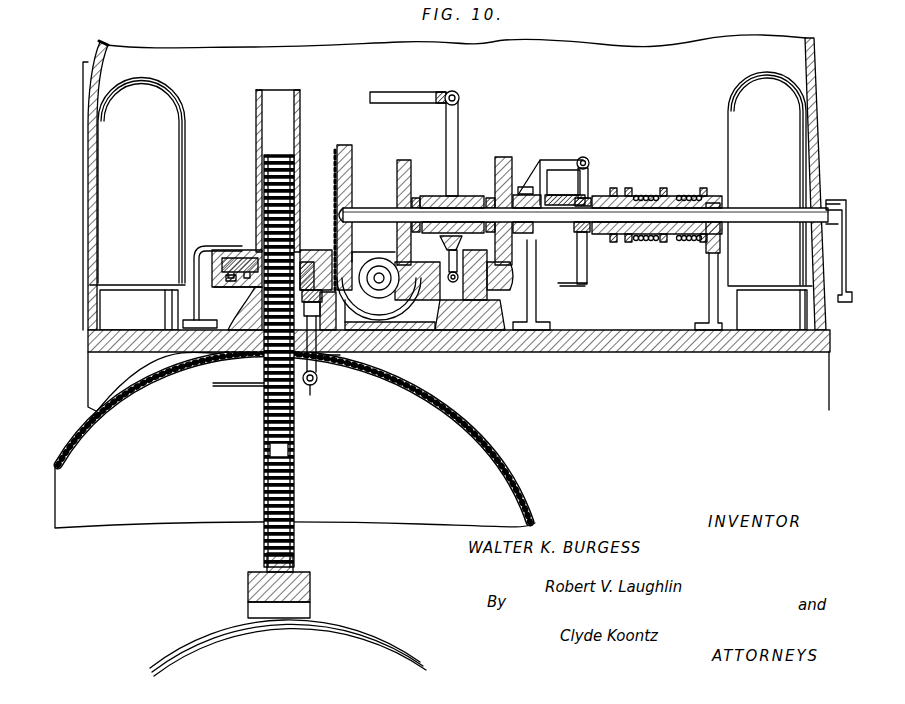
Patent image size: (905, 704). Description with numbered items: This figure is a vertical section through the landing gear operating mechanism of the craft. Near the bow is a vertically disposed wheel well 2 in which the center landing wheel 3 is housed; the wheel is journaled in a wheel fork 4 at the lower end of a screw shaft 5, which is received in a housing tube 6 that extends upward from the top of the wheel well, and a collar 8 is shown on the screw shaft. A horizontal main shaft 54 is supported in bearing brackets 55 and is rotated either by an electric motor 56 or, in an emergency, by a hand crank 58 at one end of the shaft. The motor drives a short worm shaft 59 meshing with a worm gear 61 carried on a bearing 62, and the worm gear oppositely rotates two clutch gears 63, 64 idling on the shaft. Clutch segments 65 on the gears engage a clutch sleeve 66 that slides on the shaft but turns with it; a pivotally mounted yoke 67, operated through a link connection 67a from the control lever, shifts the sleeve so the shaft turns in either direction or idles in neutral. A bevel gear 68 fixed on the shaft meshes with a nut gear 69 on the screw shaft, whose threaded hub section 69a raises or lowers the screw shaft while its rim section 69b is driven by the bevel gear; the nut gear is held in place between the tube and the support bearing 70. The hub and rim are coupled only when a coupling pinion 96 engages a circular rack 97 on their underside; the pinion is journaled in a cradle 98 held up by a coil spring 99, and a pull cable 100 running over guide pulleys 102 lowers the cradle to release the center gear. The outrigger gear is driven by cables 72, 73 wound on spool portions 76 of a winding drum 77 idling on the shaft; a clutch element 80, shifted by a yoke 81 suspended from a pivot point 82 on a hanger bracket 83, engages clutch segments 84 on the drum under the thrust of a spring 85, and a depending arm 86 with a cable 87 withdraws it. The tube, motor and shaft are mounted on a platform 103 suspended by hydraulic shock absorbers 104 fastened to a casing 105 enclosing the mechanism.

The wheel well 2 is at (507, 465).
The center landing wheel 3 is at (332, 633).
The wheel fork 4 is at (248, 598).
The screw shaft 5 is at (267, 463).
The housing tube 6 is at (258, 112).
The collar 8 is at (293, 450).
The main shaft 54 is at (793, 210).
The bearing brackets 55 is at (712, 297).
The electric motor 56 is at (387, 313).
The hand crank 58 is at (840, 252).
The worm shaft 59 is at (384, 277).
The worm gear 61 is at (494, 284).
The bearing 62 is at (503, 330).
The clutch gear 63 is at (399, 161).
The clutch gear 64 is at (502, 157).
The clutch segments 65 is at (415, 195).
The clutch sleeve 66 is at (438, 192).
The yoke 67 is at (455, 137).
The link connection 67a is at (390, 102).
The bevel gear 68 is at (342, 146).
The nut gear 69 is at (225, 257).
The hub section 69a is at (247, 265).
The rim section 69b is at (232, 298).
The support bearing 70 is at (228, 358).
The cable 72 is at (693, 193).
The cable 73 is at (636, 193).
The spool portions 76 is at (664, 193).
The winding drum 77 is at (245, 282).
The clutch element 80 is at (595, 190).
The yoke 81 is at (578, 240).
The pivot point 82 is at (454, 91).
The hanger bracket 83 is at (555, 160).
The clutch segments 84 is at (607, 193).
The spring 85 is at (560, 195).
The depending arm 86 is at (587, 252).
The cable 87 is at (575, 284).
The coupling pinion 96 is at (317, 270).
The circular rack 97 is at (247, 303).
The cradle 98 is at (308, 386).
The coil spring 99 is at (327, 358).
The pull cable 100 is at (232, 386).
The guide pulleys 102 is at (304, 396).
The table or platform 103 is at (632, 342).
The hydraulic shock absorbers 104 is at (172, 198).
The casing or shield 105 is at (133, 53).